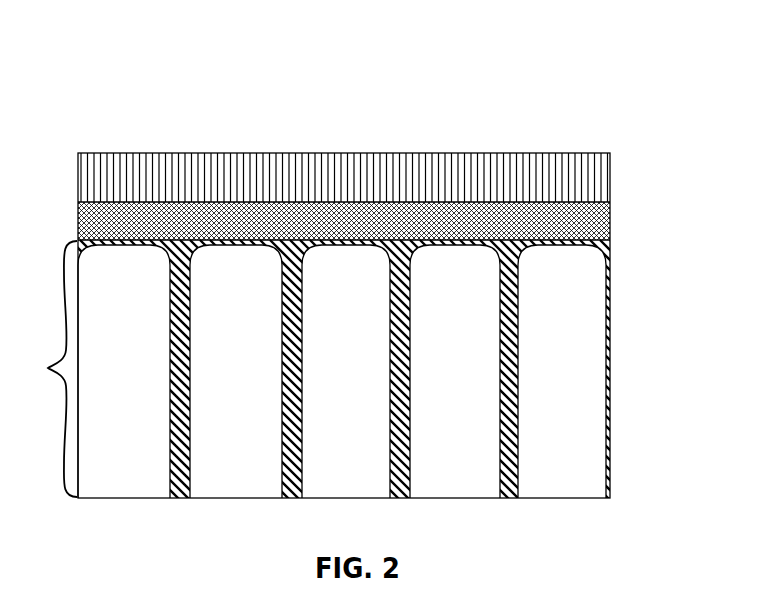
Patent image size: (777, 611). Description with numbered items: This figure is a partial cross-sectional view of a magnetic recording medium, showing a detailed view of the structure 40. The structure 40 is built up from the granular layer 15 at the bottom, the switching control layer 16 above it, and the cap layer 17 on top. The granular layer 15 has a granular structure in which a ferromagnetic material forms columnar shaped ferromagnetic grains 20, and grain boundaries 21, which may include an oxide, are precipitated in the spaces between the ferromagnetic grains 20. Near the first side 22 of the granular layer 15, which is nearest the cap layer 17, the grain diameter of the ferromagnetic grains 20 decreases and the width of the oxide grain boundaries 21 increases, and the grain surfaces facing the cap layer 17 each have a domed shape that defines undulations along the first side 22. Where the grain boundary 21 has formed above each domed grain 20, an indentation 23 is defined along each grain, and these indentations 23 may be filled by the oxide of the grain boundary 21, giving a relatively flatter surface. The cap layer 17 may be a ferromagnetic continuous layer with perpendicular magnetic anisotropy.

The structure 40 is at (84, 94).
The granular layer 15 is at (46, 369).
The switching control layer 16 is at (510, 230).
The cap layer 17 is at (505, 190).
The ferromagnetic grains 20 is at (575, 361).
The grain boundaries 21 is at (517, 318).
The first side 22 is at (348, 240).
The indentation 23 is at (382, 242).